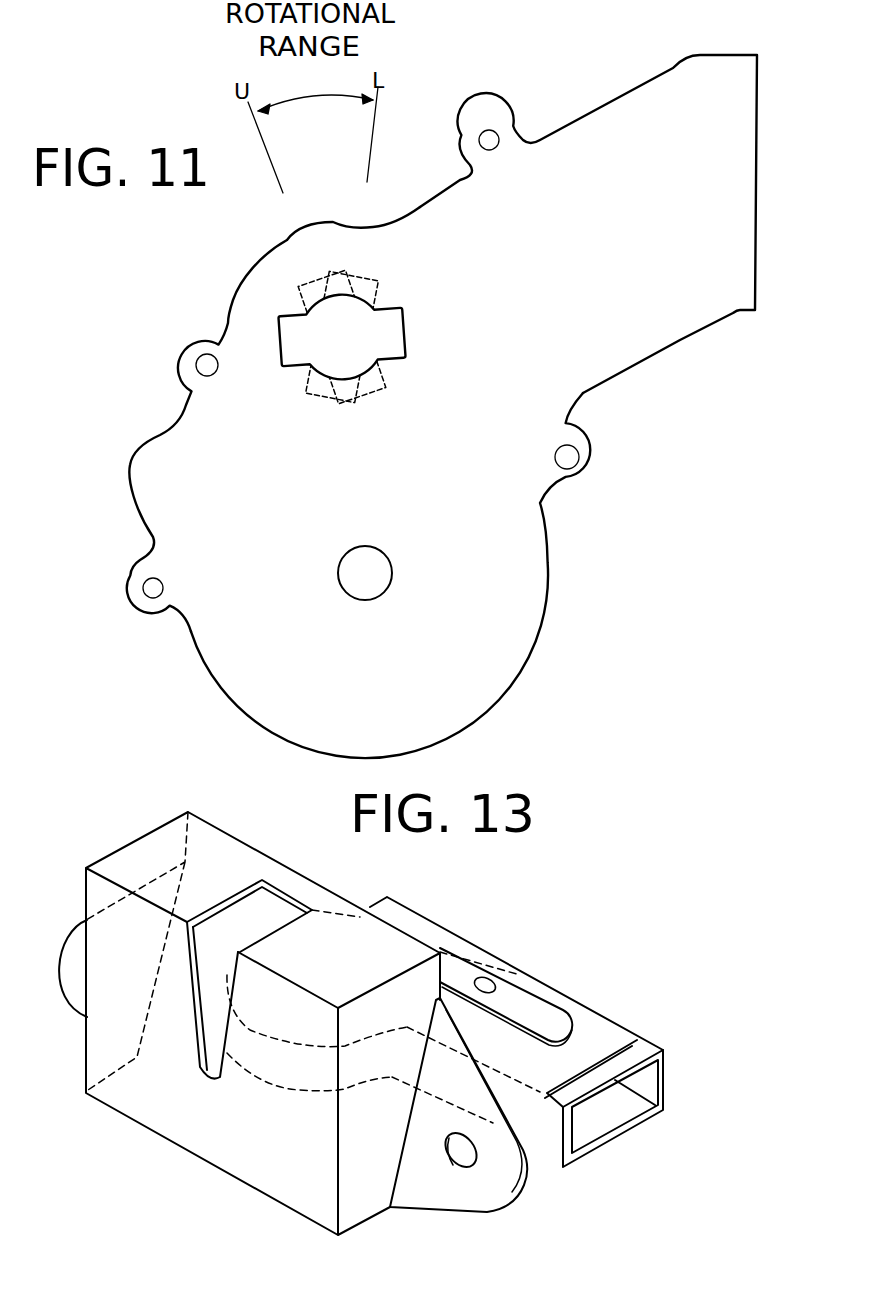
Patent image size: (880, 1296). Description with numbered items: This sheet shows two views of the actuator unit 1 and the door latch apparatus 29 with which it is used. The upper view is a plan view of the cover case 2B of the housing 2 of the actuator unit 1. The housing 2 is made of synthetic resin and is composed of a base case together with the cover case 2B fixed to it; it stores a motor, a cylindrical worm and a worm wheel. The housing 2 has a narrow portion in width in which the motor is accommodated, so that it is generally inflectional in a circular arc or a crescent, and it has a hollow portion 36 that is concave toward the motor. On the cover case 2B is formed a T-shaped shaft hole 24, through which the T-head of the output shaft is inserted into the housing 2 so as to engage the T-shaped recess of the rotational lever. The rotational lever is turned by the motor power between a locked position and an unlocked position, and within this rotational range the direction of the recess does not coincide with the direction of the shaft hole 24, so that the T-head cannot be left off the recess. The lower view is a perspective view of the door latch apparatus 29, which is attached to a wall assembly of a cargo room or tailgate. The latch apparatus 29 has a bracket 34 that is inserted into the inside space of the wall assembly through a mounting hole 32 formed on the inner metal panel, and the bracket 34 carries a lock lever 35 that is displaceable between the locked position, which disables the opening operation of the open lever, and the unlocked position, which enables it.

In FIG. 13, the actuator unit 1 is at (540, 1137).
In FIG. 11, the housing 2 is at (175, 518).
In FIG. 13, the housing 2 is at (648, 1050).
In FIG. 11, the cover case 2B is at (527, 597).
In FIG. 11, the T-shaped shaft hole 24 is at (226, 335).
In FIG. 13, the door latch apparatus 29 is at (270, 1143).
In FIG. 11, the mounting hole 32 is at (308, 390).
In FIG. 13, the bracket 34 is at (587, 1042).
In FIG. 13, the lock lever 35 is at (540, 1017).
In FIG. 11, the hollow portion 36 is at (643, 425).